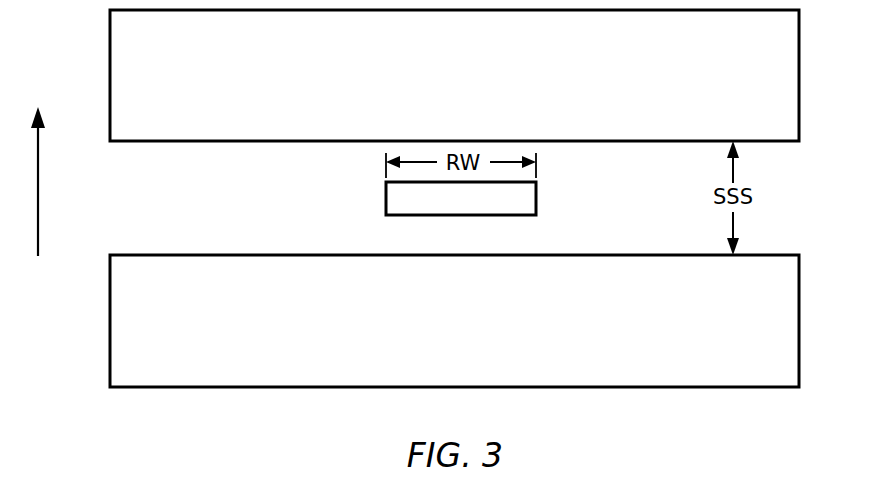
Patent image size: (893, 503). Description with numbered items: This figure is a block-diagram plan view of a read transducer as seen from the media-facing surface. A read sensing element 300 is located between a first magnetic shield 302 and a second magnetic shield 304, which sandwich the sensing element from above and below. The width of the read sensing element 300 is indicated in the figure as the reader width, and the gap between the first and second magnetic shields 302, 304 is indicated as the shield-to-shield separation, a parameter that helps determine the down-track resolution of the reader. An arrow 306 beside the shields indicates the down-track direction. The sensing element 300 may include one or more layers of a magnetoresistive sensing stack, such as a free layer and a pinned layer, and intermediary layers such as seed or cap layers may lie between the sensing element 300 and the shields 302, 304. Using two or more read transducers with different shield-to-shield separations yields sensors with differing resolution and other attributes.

The read sensing element 300 is at (386, 198).
The first magnetic shield 302 is at (110, 56).
The second magnetic shield 304 is at (110, 304).
The arrow 306 is at (40, 182).